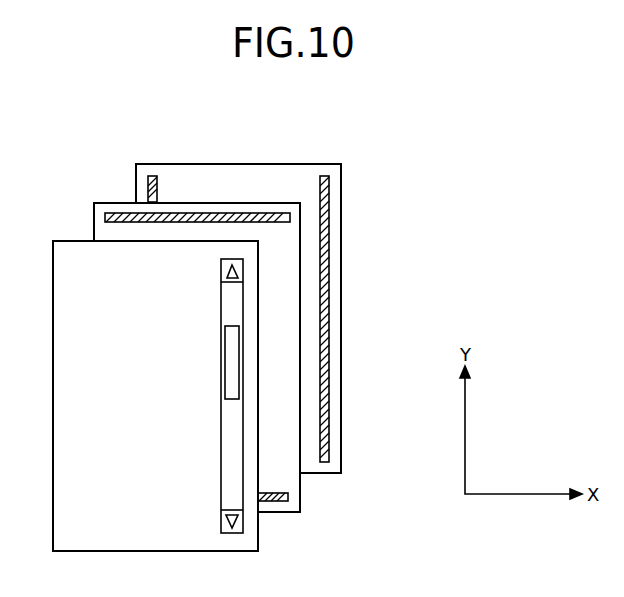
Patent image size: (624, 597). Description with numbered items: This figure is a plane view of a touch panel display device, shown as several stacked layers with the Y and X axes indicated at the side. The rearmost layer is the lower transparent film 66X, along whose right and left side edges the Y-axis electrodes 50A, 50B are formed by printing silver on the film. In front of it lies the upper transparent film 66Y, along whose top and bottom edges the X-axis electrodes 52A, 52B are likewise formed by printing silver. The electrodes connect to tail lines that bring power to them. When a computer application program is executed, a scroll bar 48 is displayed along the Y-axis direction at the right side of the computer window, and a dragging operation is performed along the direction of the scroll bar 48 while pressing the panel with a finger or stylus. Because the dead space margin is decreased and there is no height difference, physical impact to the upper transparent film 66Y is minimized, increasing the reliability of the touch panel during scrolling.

The lower transparent film 66X is at (330, 164).
The upper transparent film 66Y is at (194, 202).
The Y-axis electrode 50A is at (148, 188).
The Y-axis electrode 50B is at (329, 193).
The X-axis electrode 52A is at (270, 218).
The X-axis electrode 52B is at (289, 495).
The scroll bar 48 is at (243, 339).